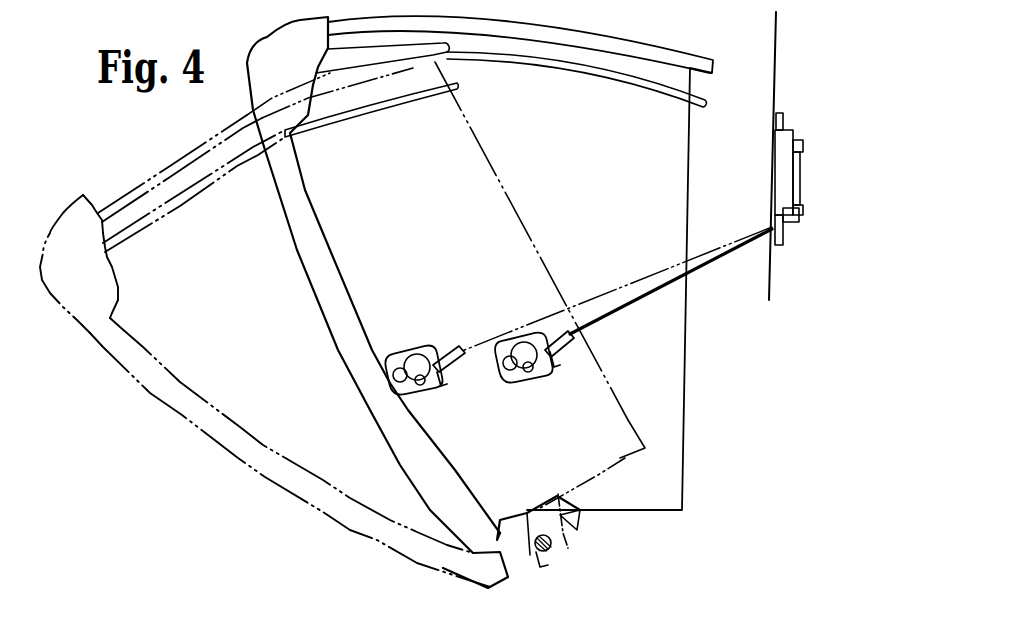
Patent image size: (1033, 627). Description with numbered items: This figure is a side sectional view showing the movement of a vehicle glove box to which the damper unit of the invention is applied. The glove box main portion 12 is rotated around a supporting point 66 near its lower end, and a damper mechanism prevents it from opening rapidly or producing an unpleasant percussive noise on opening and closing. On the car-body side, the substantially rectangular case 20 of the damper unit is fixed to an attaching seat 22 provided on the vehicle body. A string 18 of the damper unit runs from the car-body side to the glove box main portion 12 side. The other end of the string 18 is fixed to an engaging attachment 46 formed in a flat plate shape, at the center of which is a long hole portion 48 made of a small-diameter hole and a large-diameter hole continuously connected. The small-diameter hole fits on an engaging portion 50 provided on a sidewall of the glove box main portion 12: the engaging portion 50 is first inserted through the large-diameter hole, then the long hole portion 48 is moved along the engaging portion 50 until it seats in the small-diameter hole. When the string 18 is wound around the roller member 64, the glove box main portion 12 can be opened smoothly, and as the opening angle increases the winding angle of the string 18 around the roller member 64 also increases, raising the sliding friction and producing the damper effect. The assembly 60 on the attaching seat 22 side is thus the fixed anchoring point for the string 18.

The glove box main portion 12 is at (665, 467).
The string 18 is at (645, 296).
The case 20 is at (802, 180).
The attaching seat 22 is at (772, 283).
The engaging attachment 46 is at (407, 346).
The long hole portion 48 is at (430, 392).
The engaging portion 50 is at (392, 382).
The bracket assembly 60 is at (805, 128).
The roller member 64 is at (783, 230).
The supporting point 66 is at (548, 553).